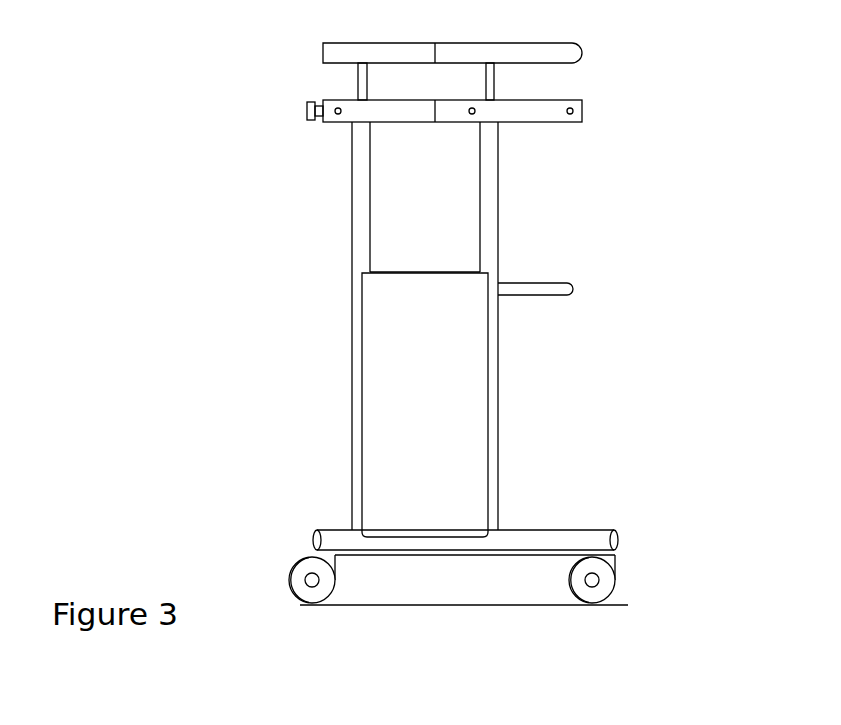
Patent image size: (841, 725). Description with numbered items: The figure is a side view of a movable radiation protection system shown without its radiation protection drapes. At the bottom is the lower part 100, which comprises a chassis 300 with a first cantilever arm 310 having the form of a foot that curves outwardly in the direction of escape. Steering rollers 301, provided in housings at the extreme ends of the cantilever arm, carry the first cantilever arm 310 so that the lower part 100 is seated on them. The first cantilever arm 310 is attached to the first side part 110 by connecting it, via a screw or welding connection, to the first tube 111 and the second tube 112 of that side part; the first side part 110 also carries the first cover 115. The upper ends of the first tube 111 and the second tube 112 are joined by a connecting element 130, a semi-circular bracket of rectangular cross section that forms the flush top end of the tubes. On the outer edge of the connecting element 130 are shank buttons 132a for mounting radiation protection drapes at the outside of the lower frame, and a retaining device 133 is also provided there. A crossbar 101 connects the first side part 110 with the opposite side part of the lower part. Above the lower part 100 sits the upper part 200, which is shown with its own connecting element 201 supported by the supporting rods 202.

The lower part 100 is at (650, 262).
The crossbar 101 is at (552, 290).
The first side part 110 is at (457, 200).
The first tube 111 is at (490, 227).
The second tube 112 is at (362, 195).
The first cover 115 is at (468, 385).
The connecting element 130 is at (452, 113).
The shank button 132a is at (575, 110).
The retaining device 133 is at (305, 113).
The upper part 200 is at (623, 68).
The connecting element 201 is at (540, 53).
The supporting rods 202 is at (362, 87).
The chassis 300 is at (515, 540).
The steering rollers 301 is at (300, 572).
The first cantilever arm 310 is at (555, 542).